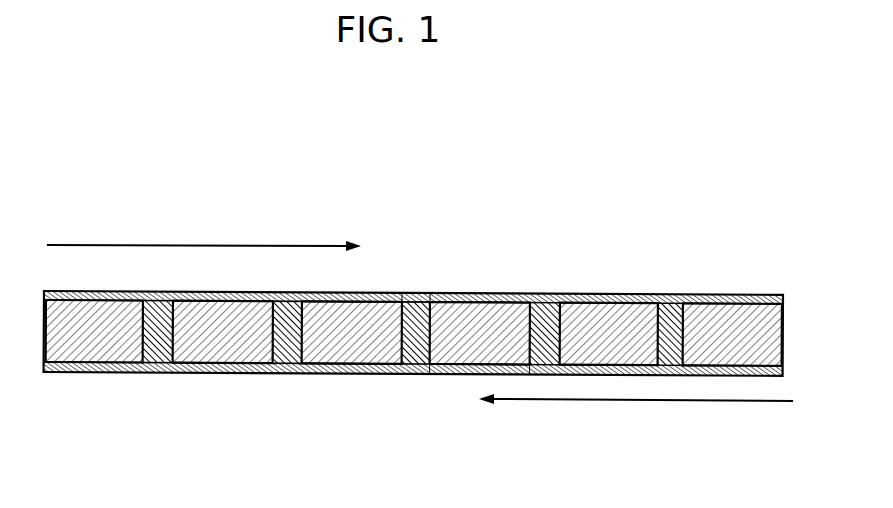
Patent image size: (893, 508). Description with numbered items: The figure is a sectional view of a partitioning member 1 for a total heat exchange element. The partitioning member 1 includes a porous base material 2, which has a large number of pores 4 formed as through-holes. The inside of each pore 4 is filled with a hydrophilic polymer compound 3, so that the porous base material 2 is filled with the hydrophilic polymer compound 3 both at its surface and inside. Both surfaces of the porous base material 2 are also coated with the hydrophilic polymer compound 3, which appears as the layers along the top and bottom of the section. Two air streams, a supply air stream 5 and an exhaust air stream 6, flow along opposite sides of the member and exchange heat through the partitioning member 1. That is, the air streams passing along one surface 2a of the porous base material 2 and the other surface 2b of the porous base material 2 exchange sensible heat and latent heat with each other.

The partitioning member for total heat exchange element 1 is at (413, 344).
The porous base material 2 is at (218, 343).
The one surface of porous base material 2a is at (438, 372).
The other surface of porous base material 2b is at (420, 291).
The hydrophilic polymer compound 3 is at (507, 292).
The pores 4 is at (272, 393).
The supply air stream 5 is at (668, 401).
The exhaust air stream 6 is at (227, 243).